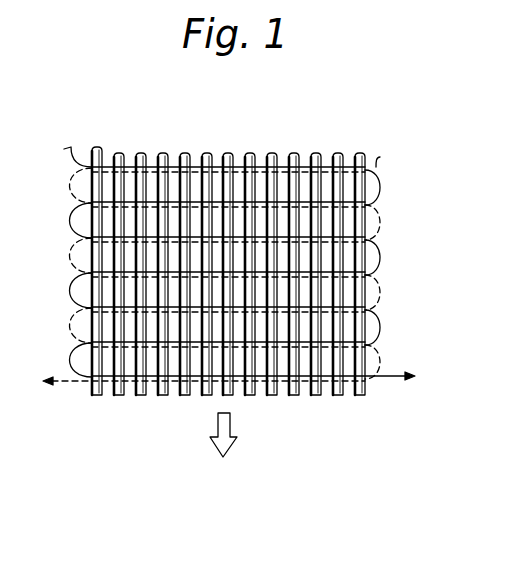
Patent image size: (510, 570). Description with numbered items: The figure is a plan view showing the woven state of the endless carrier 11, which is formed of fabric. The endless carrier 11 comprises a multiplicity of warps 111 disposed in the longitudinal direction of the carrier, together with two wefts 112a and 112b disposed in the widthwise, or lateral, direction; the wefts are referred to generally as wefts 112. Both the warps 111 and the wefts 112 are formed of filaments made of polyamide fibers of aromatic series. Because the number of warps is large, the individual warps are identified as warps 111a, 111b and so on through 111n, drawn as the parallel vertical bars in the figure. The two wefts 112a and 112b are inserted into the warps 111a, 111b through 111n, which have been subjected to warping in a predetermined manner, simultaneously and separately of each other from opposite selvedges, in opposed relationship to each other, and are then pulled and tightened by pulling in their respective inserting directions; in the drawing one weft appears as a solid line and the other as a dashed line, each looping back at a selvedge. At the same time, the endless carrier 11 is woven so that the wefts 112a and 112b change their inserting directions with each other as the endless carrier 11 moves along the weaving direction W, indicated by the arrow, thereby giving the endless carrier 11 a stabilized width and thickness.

The endless carrier 11 is at (330, 142).
The warps 111 is at (387, 459).
The warp 111a is at (93, 397).
The warp 111b is at (118, 397).
The warp 111n is at (356, 397).
The wefts 112 is at (447, 178).
The weft 112a is at (373, 196).
The weft 112b is at (376, 222).
The weaving direction W is at (231, 435).